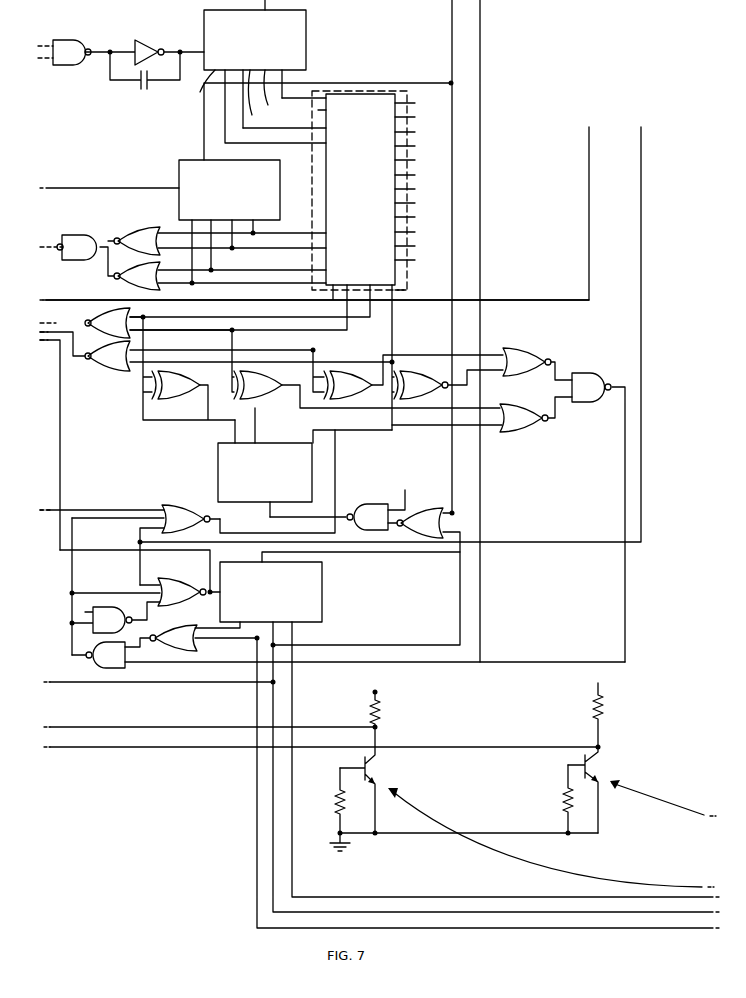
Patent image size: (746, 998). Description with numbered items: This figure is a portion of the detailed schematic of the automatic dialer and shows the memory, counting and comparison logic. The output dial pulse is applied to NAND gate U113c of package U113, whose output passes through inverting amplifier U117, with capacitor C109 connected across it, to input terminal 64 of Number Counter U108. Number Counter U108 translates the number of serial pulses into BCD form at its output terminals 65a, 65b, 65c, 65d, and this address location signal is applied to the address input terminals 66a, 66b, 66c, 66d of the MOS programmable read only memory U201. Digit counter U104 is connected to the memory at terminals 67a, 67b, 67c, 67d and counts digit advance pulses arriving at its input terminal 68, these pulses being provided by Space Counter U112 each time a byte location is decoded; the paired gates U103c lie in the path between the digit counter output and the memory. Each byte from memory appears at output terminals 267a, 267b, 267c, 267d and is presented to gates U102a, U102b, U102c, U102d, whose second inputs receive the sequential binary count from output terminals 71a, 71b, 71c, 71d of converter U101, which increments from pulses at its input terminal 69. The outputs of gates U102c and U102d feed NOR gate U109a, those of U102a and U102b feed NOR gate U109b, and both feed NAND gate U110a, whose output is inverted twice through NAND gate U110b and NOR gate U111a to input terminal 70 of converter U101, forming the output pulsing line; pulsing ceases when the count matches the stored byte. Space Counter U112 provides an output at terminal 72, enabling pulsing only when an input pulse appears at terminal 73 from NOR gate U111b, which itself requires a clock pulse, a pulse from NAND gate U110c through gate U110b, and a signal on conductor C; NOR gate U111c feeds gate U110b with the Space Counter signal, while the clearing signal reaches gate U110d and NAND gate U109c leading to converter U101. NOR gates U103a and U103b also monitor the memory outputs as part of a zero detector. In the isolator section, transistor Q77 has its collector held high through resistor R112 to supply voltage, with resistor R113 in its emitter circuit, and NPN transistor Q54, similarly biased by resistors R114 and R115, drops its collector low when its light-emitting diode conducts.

The NAND gate U113c is at (86, 66).
The inverting amplifier U117 is at (153, 41).
The capacitor C109 is at (145, 80).
The input terminal 64 is at (203, 52).
The Number Counter U108 is at (306, 46).
The BCD output terminal 65a is at (191, 88).
The BCD output terminal 65b is at (258, 99).
The BCD output terminal 65c is at (266, 92).
The BCD output terminal 65d is at (290, 72).
The address input terminal 66a is at (322, 143).
The address input terminal 66b is at (322, 128).
The address input terminal 66c is at (325, 110).
The address input terminal 66d is at (326, 97).
The memory U201 is at (363, 190).
The digit counter U104 is at (194, 161).
The input terminal 68 is at (178, 189).
The NAND gate U113 is at (74, 236).
The NOR gates U103c is at (130, 224).
The memory terminal 67a is at (319, 290).
The memory terminal 67b is at (326, 270).
The memory terminal 67c is at (326, 248).
The memory terminal 67d is at (326, 233).
The memory output terminal 267a is at (419, 292).
The memory output terminal 267b is at (370, 310).
The memory output terminal 267c is at (345, 290).
The memory output terminal 267d is at (328, 300).
The NOR gate U103a is at (94, 313).
The NOR gate U103b is at (217, 441).
The NOR gate U102a is at (189, 368).
The NOR gate U102b is at (366, 374).
The NOR gate U102c is at (408, 386).
The NOR gate U102d is at (447, 357).
The NOR gate U109a is at (540, 351).
The NOR gate U109b is at (534, 432).
The NAND gate U110a is at (604, 375).
The output terminal 71a is at (232, 443).
The output terminal 71b is at (257, 442).
The output terminal 71c is at (313, 439).
The output terminal 71d is at (335, 434).
The converter U101 is at (312, 475).
The input terminal 69 is at (265, 505).
The input terminal 70 is at (308, 511).
The NOR gate U111a is at (198, 509).
The NAND gate U110d is at (358, 510).
The NAND gate U109c is at (430, 507).
The conductor C is at (236, 546).
The NOR gate U111b is at (183, 578).
The NAND gate U110c is at (110, 606).
The input terminal 73 is at (216, 595).
The Space Counter U112 is at (322, 592).
The output terminal 72 is at (260, 622).
The NOR gate U111c is at (194, 642).
The NAND gate U110b is at (101, 672).
The resistor R112 is at (368, 709).
The resistor R113 is at (340, 797).
The transistor Q77 is at (369, 767).
The resistor R114 is at (588, 709).
The resistor R115 is at (558, 797).
The NPN transistor Q54 is at (592, 767).